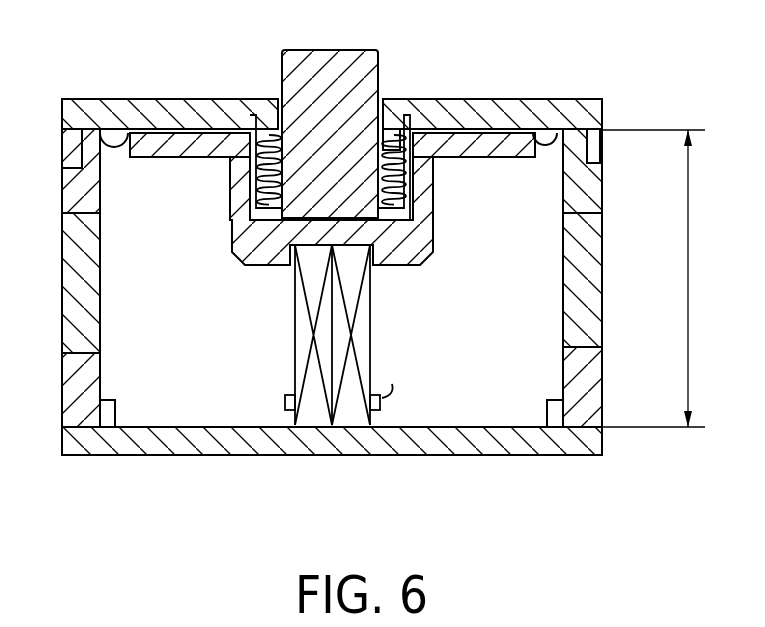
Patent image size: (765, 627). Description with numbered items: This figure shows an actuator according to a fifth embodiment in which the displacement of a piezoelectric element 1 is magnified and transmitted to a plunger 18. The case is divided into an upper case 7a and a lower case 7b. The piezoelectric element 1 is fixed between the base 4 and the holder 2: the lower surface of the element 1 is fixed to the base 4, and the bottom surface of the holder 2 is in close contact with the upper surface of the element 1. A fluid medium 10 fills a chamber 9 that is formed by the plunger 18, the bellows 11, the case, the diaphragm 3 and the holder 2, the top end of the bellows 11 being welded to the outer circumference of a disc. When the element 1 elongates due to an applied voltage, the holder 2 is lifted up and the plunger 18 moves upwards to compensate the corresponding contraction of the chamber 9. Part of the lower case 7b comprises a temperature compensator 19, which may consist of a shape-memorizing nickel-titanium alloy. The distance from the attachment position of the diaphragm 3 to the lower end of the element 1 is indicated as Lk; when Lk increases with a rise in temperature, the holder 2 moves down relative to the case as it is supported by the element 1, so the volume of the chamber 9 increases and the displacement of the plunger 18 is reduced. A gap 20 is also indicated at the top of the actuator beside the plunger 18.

The piezoelectric element 1 is at (293, 352).
The holder 2 is at (202, 143).
The diaphragm 3 is at (538, 100).
The base 4 is at (497, 448).
The upper case 7a is at (583, 108).
The lower case 7b is at (583, 448).
The chamber 9 is at (232, 193).
The fluid medium 10 is at (432, 103).
The bellows 11 is at (472, 133).
The plunger 18 is at (362, 68).
The temperature compensator 19 is at (603, 300).
The gap 20 is at (266, 90).
The distance from diaphragm attachment position to lower end of element Lk is at (653, 278).